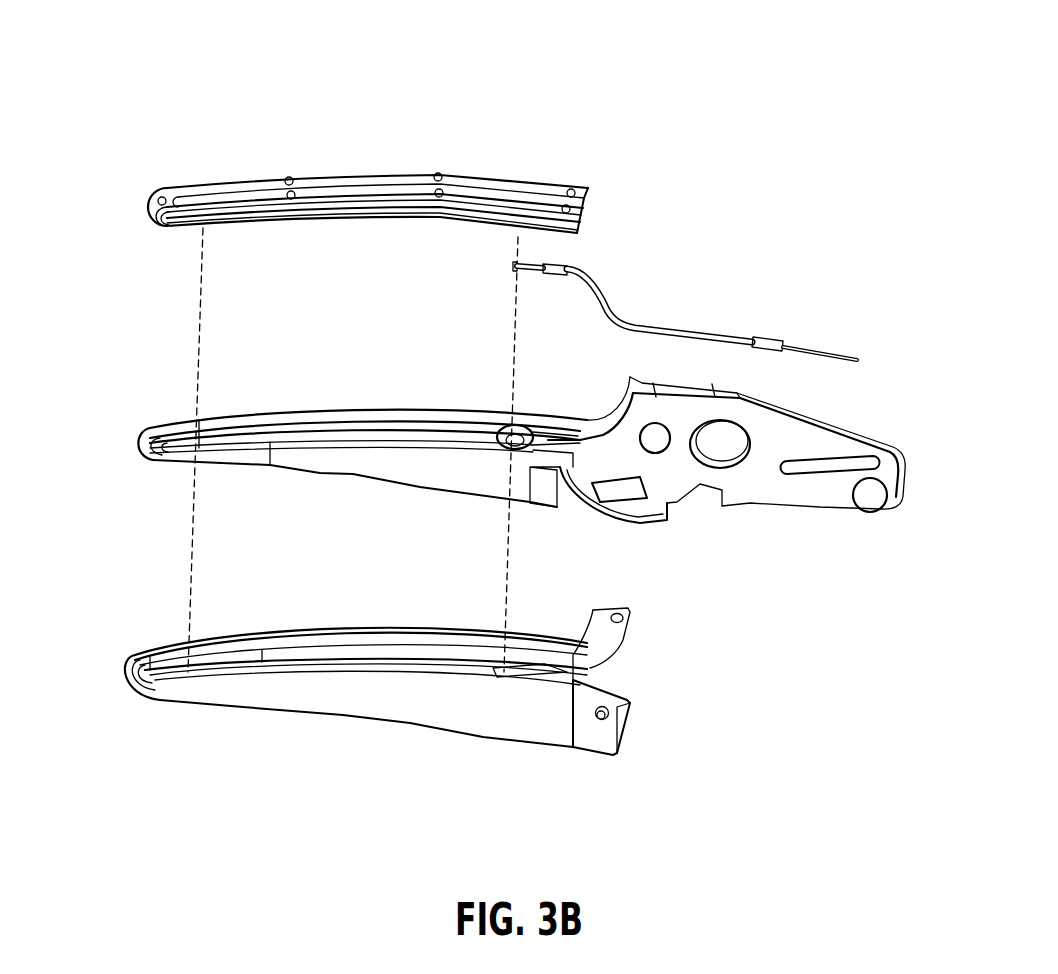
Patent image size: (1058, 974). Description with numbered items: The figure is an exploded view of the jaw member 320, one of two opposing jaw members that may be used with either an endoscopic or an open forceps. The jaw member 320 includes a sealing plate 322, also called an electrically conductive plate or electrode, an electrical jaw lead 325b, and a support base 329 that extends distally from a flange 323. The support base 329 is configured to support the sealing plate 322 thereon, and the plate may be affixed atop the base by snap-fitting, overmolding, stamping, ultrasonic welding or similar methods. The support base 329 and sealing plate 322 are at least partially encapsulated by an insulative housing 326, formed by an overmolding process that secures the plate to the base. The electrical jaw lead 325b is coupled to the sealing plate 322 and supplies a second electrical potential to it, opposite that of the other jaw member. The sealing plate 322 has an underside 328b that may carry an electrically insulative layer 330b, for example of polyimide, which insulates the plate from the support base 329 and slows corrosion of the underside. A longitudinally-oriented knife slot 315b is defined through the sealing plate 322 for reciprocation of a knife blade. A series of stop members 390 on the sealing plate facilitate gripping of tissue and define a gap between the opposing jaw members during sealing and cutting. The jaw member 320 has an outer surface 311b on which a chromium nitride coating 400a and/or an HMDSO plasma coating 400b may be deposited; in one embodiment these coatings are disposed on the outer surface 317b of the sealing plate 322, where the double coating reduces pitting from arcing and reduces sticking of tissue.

The jaw member 320 is at (188, 62).
The outer surface 311b is at (195, 190).
The outer surface of sealing plate 317b is at (335, 182).
The stop members 390 is at (160, 198).
The chromium nitride coating 400a is at (138, 202).
The hexamethyldisiloxane plasma coating 400b is at (138, 227).
The sealing plate 322 is at (440, 177).
The knife slot 315b is at (508, 193).
The electrically insulative layer 330b is at (587, 193).
The underside 328b is at (376, 213).
The electrical jaw lead 325b is at (677, 330).
The flange 323 is at (840, 430).
The support base 329 is at (357, 410).
The insulative housing 326 is at (358, 704).